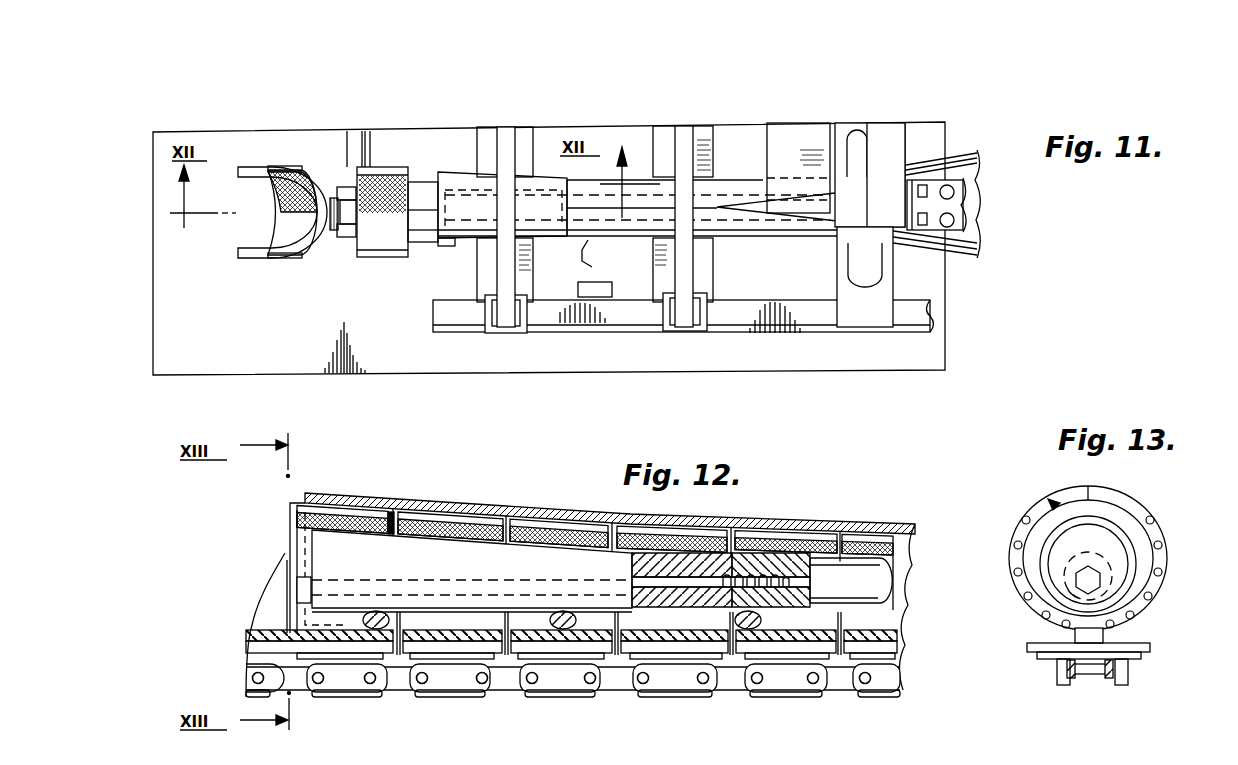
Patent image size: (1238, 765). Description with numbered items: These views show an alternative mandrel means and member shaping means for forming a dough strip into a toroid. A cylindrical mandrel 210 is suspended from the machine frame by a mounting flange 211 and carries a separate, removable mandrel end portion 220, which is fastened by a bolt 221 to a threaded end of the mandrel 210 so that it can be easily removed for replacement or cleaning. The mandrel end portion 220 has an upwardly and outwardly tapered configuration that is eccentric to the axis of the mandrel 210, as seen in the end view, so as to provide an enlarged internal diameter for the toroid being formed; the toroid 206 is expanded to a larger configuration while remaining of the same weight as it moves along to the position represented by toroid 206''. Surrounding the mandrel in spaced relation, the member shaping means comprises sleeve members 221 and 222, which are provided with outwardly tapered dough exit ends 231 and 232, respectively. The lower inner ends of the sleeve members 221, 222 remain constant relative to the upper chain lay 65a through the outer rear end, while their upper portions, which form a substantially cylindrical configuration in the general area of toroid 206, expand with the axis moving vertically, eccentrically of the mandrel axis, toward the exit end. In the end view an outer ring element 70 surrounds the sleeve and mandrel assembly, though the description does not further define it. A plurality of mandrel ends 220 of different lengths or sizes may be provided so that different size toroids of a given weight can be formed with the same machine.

In FIG. 11, the outwardly tapered dough exit end 231 is at (453, 178).
In FIG. 11, the outwardly tapered dough exit end 232 is at (452, 247).
In FIG. 11, the removable mandrel end portion 220 is at (543, 200).
In FIG. 12, the removable mandrel end portion 220 is at (445, 548).
In FIG. 13, the removable mandrel end portion 220 is at (1103, 540).
In FIG. 11, the sleeve member 221 is at (640, 183).
In FIG. 12, the sleeve member 221 is at (297, 583).
In FIG. 11, the mandrel 210 is at (753, 203).
In FIG. 12, the mandrel 210 is at (862, 570).
In FIG. 13, the mandrel 210 is at (1148, 555).
In FIG. 11, the mounting flange 211 is at (810, 140).
In FIG. 11, the sleeve member 222 is at (592, 267).
In FIG. 12, the toroid 206'' is at (345, 496).
In FIG. 12, the toroid 206 is at (645, 511).
In FIG. 12, the upper chain lay 65a is at (620, 681).
In FIG. 13, the upper chain lay 65a is at (1125, 667).
In FIG. 13, the ring 70 is at (1050, 498).